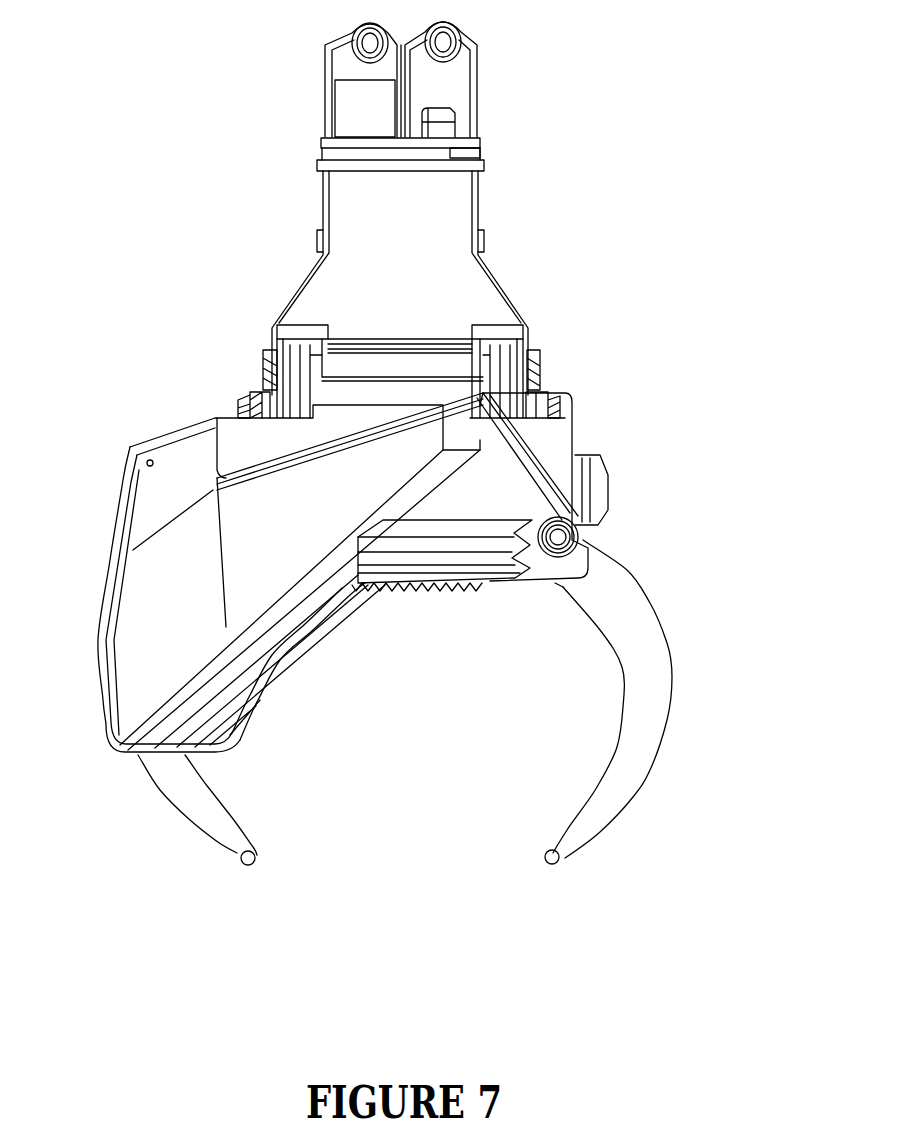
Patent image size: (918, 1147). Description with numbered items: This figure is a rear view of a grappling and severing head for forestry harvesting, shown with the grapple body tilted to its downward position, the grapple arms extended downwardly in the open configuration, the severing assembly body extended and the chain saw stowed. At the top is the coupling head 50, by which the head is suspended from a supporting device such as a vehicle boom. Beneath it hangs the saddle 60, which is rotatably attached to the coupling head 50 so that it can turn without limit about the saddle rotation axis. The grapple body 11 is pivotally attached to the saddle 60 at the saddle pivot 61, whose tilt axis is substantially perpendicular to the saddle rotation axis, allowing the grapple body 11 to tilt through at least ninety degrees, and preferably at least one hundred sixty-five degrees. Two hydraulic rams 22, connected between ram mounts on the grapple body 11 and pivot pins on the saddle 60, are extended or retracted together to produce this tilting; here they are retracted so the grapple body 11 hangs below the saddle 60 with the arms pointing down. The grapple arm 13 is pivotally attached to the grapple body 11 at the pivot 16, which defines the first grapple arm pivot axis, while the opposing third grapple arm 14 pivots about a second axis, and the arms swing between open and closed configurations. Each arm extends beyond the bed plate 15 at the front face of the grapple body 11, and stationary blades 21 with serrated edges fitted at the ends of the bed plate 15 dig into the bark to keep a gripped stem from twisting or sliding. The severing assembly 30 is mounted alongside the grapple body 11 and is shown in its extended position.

The coupling head 50 is at (460, 76).
The saddle 60 is at (447, 232).
The saddle pivot 61 is at (262, 370).
The hydraulic rams 22 is at (240, 410).
The grapple body 11 is at (557, 443).
The severing assembly 30 is at (133, 640).
The stationary blades 21 is at (491, 586).
The pivot 16 is at (578, 540).
The grapple arm 13 is at (645, 657).
The third grapple arm 14 is at (195, 815).
The bed plate 15 is at (400, 618).